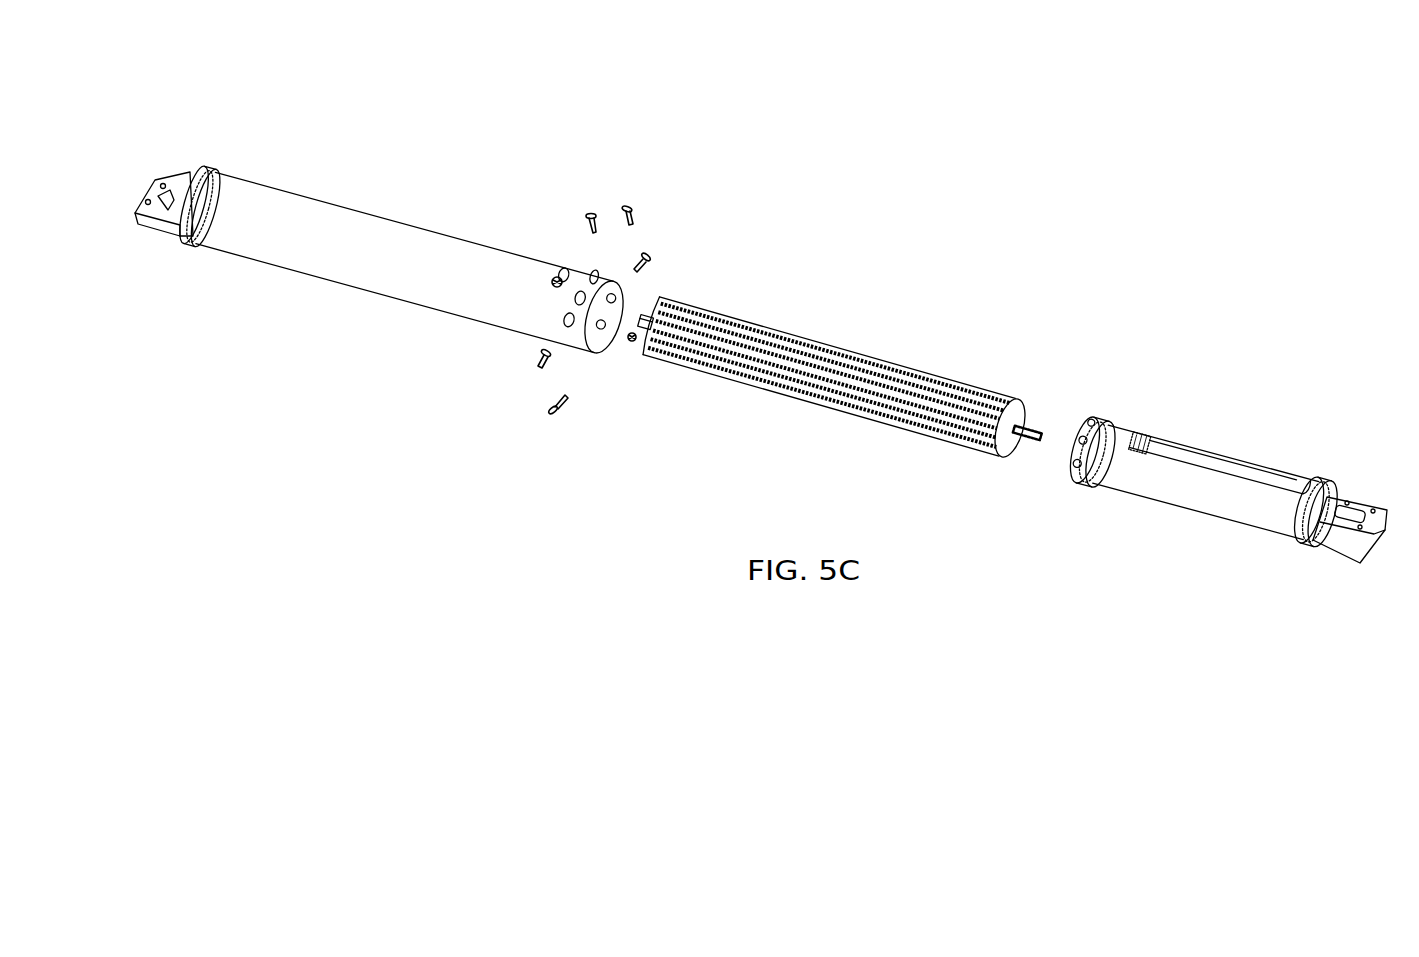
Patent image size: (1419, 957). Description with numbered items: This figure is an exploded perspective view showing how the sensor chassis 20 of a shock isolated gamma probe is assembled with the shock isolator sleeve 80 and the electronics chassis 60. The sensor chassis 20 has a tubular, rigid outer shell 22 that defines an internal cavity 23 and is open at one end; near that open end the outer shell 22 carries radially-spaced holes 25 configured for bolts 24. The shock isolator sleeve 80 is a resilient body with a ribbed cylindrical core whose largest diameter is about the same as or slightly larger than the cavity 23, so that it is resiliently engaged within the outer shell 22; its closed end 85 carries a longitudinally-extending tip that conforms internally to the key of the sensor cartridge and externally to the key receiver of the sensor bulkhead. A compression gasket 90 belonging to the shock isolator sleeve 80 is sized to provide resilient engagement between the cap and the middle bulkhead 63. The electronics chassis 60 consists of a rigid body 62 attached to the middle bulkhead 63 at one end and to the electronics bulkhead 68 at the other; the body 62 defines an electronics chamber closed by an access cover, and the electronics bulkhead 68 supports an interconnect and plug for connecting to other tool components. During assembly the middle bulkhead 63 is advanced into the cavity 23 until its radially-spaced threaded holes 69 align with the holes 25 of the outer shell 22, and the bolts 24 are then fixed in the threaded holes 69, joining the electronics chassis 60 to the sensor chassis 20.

The sensor chassis 20 is at (255, 276).
The outer shell 22 is at (359, 232).
The internal cavity 23 is at (612, 311).
The bolts 24 is at (591, 212).
The radially-spaced holes 25 is at (586, 273).
The shock isolator sleeve 80 is at (760, 407).
The closed end 85 is at (665, 302).
The compression gasket 90 is at (1020, 407).
The electronics chassis 60 is at (1292, 378).
The body 62 is at (1160, 492).
The middle bulkhead 63 is at (1078, 420).
The electronics bulkhead 68 is at (1343, 488).
The threaded holes 69 is at (1092, 418).